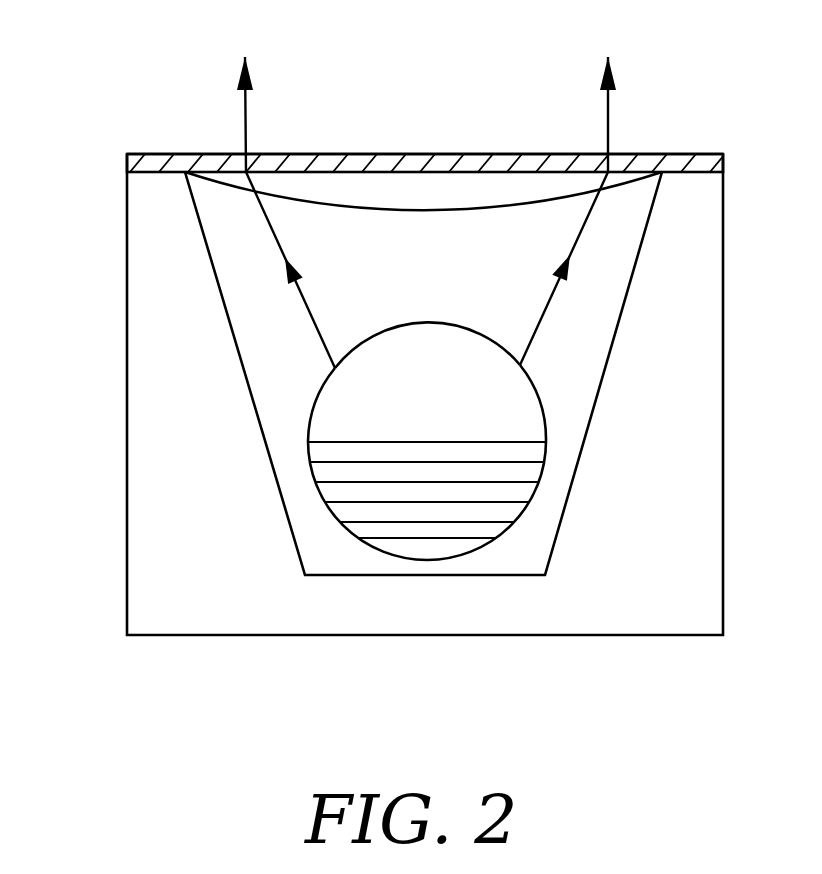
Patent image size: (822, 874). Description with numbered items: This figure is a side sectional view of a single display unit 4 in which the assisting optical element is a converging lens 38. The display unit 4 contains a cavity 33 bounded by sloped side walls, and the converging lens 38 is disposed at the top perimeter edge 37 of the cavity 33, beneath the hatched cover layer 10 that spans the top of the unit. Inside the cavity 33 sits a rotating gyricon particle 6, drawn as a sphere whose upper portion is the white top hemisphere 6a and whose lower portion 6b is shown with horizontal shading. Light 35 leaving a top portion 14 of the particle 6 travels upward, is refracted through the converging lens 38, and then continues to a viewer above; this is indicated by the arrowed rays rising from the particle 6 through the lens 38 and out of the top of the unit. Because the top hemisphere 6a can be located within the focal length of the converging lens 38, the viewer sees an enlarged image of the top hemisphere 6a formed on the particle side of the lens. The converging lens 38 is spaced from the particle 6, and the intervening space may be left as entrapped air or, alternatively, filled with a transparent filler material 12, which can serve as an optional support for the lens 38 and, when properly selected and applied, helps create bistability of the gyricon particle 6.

The display unit 4 is at (222, 638).
The particle 6 is at (299, 475).
The top hemisphere 6a is at (473, 357).
The lower portion of light emitting element 6b is at (422, 533).
The cover plate / window 10 is at (440, 154).
The transparent filler material 12 is at (346, 323).
The top portion 14 is at (405, 324).
The cavity 33 is at (225, 310).
The light 35 is at (418, 191).
The top perimeter edge 37 is at (678, 150).
The converging lens 38 is at (520, 205).